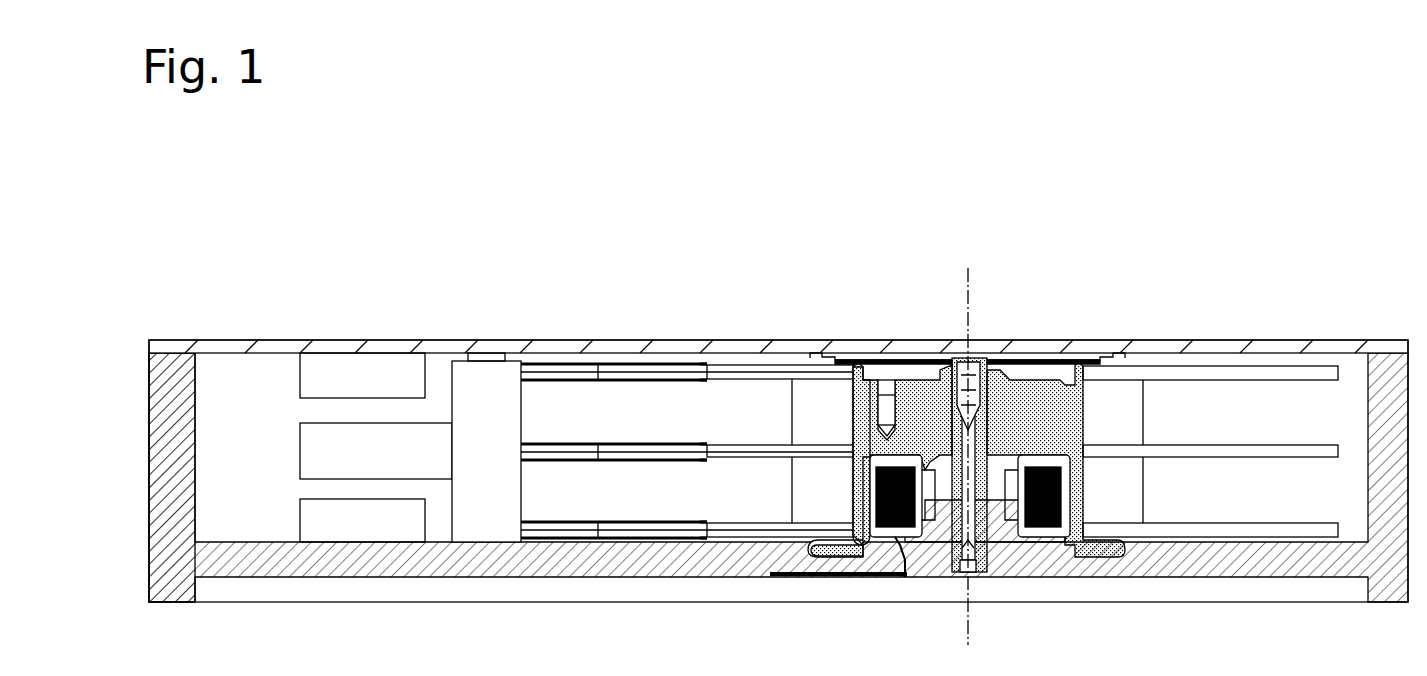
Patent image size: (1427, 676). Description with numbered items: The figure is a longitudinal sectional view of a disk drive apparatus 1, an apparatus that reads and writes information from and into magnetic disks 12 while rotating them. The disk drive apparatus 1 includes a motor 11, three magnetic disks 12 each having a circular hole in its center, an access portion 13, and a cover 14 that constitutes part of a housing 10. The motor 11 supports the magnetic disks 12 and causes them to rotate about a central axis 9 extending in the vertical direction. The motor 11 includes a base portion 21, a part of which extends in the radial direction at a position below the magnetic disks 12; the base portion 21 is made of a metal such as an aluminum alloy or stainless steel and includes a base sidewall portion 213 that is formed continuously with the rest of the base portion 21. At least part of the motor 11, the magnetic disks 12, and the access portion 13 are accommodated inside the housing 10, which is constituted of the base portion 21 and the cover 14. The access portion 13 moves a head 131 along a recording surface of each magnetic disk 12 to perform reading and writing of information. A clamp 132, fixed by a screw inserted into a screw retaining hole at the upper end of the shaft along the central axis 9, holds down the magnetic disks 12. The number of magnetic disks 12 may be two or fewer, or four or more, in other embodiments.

The disk drive apparatus 1 is at (698, 304).
The central axis 9 is at (963, 303).
The housing 10 is at (270, 328).
The motor 11 is at (903, 368).
The magnetic disk 12 is at (1237, 447).
The access portion 13 is at (593, 425).
The head 131 is at (677, 440).
The clamp 132 is at (1035, 358).
The cover 14 is at (445, 345).
The base portion 21 is at (1202, 560).
The base sidewall portion 213 is at (172, 470).